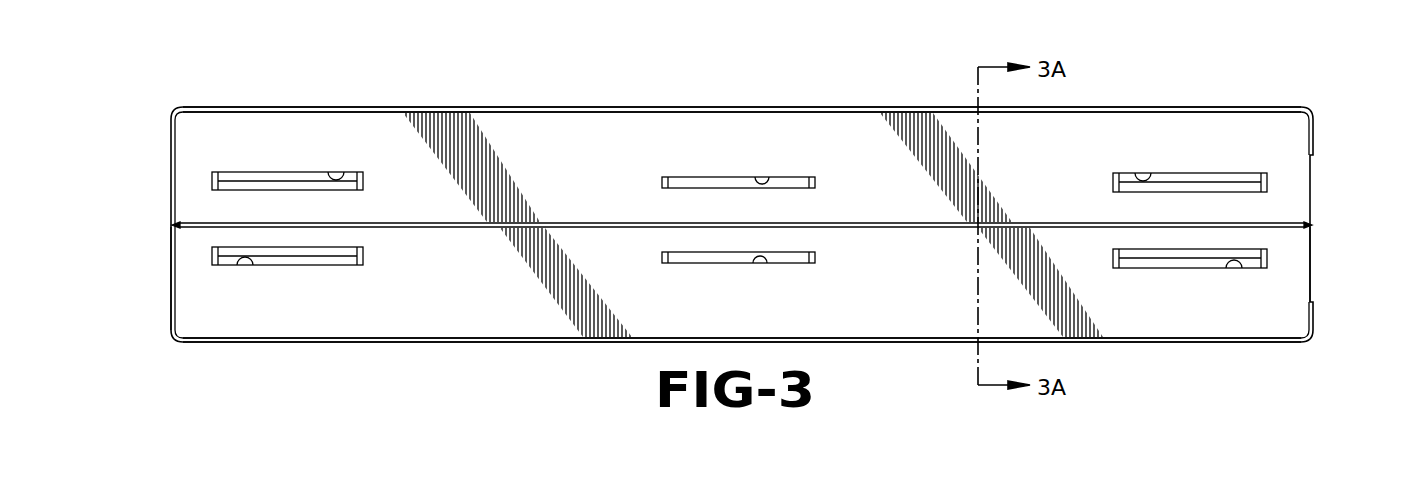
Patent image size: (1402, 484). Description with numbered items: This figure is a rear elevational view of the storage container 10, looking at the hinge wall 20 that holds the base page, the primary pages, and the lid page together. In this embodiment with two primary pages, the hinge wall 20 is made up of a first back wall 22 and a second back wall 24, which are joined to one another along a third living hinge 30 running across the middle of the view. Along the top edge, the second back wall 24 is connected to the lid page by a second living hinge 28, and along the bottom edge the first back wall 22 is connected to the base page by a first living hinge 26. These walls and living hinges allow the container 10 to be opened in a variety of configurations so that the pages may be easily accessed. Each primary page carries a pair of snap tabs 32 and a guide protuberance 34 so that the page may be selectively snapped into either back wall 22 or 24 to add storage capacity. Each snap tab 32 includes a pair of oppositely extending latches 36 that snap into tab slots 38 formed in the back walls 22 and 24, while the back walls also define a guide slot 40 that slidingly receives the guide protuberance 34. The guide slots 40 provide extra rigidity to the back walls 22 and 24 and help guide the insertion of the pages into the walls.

The storage container 10 is at (838, 78).
The hinge wall 20 is at (423, 313).
The first back wall 22 is at (467, 304).
The second back wall 24 is at (596, 157).
The first living hinge 26 is at (545, 343).
The second living hinge 28 is at (530, 111).
The third living hinge 30 is at (860, 224).
The snap tab 32 is at (281, 180).
The guide protuberance 34 is at (712, 181).
The latch 36 is at (238, 172).
The tab slot 38 is at (345, 172).
The guide slot 40 is at (765, 176).